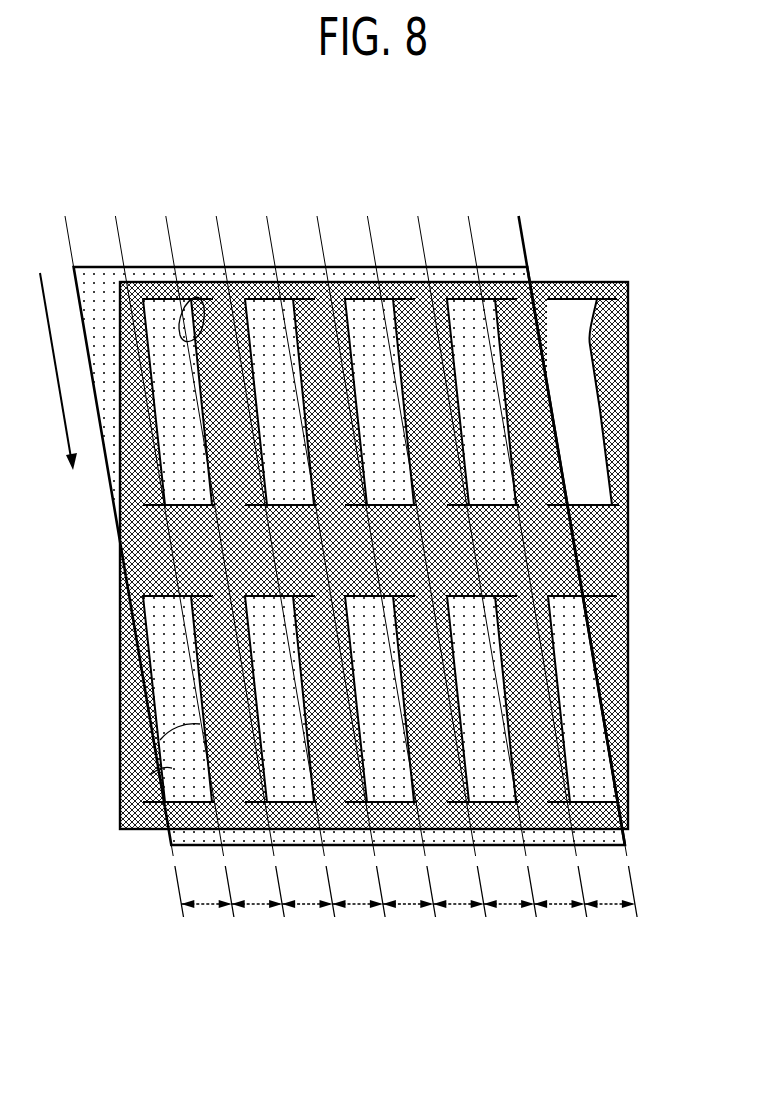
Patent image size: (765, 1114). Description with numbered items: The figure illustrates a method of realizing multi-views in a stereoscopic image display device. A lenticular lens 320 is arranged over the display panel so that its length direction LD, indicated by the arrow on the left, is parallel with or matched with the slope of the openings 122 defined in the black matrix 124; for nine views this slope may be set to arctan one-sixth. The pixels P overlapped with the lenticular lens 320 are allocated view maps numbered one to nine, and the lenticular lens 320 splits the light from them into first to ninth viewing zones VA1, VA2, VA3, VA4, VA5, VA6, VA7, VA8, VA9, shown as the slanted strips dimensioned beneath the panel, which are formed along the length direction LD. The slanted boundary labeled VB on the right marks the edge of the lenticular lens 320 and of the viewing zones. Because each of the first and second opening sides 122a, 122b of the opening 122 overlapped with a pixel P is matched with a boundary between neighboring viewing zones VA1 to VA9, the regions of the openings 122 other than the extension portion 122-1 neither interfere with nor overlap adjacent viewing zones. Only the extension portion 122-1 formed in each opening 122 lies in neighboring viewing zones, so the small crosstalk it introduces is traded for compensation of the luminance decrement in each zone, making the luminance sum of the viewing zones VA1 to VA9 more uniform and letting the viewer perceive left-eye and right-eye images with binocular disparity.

The lenticular lens 320 is at (104, 266).
The extension portion 122-1 is at (196, 335).
The view boundary VB is at (521, 228).
The length direction LD is at (49, 371).
The opening 122 is at (320, 552).
The black matrix 124 is at (615, 552).
The pixel P is at (123, 697).
The first opening side 122a is at (160, 740).
The second opening side 122b is at (150, 775).
The first viewing zone VA1 is at (206, 921).
The second viewing zone VA2 is at (257, 921).
The third viewing zone VA3 is at (307, 921).
The fourth viewing zone VA4 is at (358, 921).
The fifth viewing zone VA5 is at (408, 921).
The sixth viewing zone VA6 is at (458, 921).
The seventh viewing zone VA7 is at (509, 921).
The eighth viewing zone VA8 is at (559, 921).
The ninth viewing zone VA9 is at (610, 921).